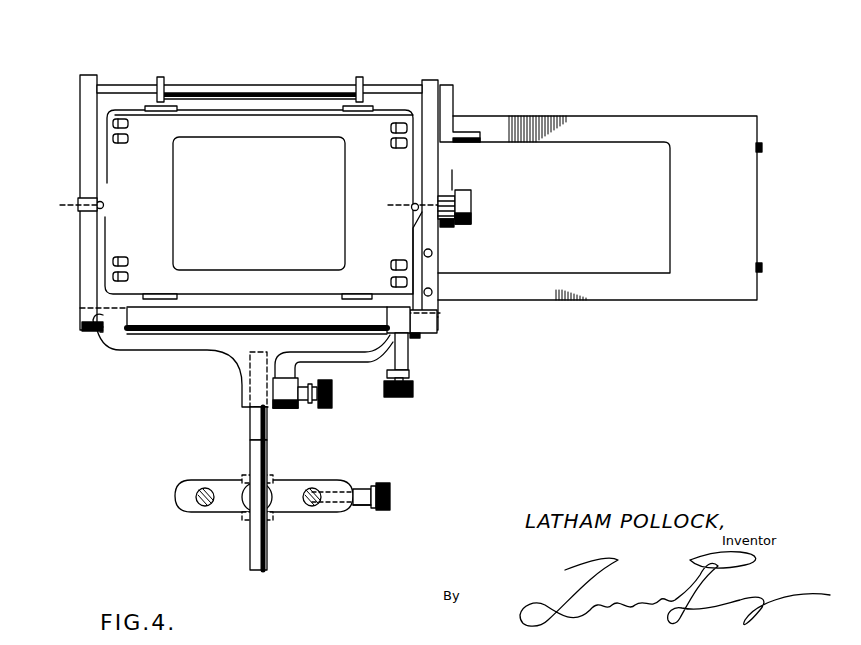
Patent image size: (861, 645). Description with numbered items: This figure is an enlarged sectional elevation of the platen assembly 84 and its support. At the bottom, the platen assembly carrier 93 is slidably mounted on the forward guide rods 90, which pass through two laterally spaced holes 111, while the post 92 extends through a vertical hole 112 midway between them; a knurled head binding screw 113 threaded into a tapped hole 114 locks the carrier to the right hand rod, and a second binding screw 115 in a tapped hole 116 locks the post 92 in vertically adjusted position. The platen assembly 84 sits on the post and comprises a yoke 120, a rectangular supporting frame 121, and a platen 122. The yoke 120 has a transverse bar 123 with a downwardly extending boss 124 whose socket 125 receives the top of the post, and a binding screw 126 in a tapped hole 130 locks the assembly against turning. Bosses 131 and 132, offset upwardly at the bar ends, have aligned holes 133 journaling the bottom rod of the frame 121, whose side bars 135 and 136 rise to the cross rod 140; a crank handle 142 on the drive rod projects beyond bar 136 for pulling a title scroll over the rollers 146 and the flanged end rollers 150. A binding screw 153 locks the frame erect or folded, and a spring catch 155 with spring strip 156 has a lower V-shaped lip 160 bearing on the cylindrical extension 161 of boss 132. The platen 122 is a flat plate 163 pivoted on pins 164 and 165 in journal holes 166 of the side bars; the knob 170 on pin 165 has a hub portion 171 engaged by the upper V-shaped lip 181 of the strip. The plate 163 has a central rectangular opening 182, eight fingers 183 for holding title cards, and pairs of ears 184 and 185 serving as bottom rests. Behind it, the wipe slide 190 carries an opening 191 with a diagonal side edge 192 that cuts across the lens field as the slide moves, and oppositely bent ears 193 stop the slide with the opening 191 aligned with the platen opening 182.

The platen assembly 84 is at (130, 78).
The forward guide rods 90 is at (196, 503).
The post 92 is at (250, 432).
The platen assembly carrier 93 is at (222, 480).
The holes 111 is at (200, 491).
The vertical hole 112 is at (250, 508).
The knurled head binding screw 113 is at (382, 483).
The tapped hole 114 is at (348, 510).
The second binding screw 115 is at (268, 492).
The tapped hole 116 is at (253, 521).
The yoke 120 is at (169, 347).
The rectangular supporting frame 121 is at (80, 297).
The platen 122 is at (218, 292).
The bar 123 is at (140, 342).
The boss 124 is at (245, 398).
The socket 125 is at (300, 362).
The binding screw 126 is at (332, 398).
The tapped hole 130 is at (288, 408).
The boss 131 is at (98, 320).
The boss 132 is at (410, 338).
The holes 133 is at (390, 333).
The side bar 135 is at (80, 156).
The side bar 136 is at (487, 142).
The cross rod 140 is at (388, 92).
The crank handle 142 is at (455, 110).
The rollers 146 is at (292, 90).
The end rollers 150 is at (168, 84).
The binding screw 153 is at (413, 392).
The spring catch 155 is at (448, 287).
The spring strip 156 is at (430, 268).
The V-shaped lip 160 is at (440, 317).
The cylindrical extension 161 is at (418, 336).
The plate 163 is at (377, 127).
The pivot pin 164 is at (104, 205).
The pivot pin 165 is at (410, 212).
The journal holes 166 is at (241, 196).
The knob 170 is at (463, 210).
The hub portion 171 is at (453, 190).
The V-shaped lip 181 is at (450, 225).
The rectangular opening 182 is at (252, 137).
The fingers 183 is at (113, 138).
The ears 184 is at (166, 297).
The ears 185 is at (170, 111).
The wipe slide 190 is at (636, 116).
The opening 191 is at (600, 142).
The side edge 192 is at (440, 230).
The ears 193 is at (760, 145).